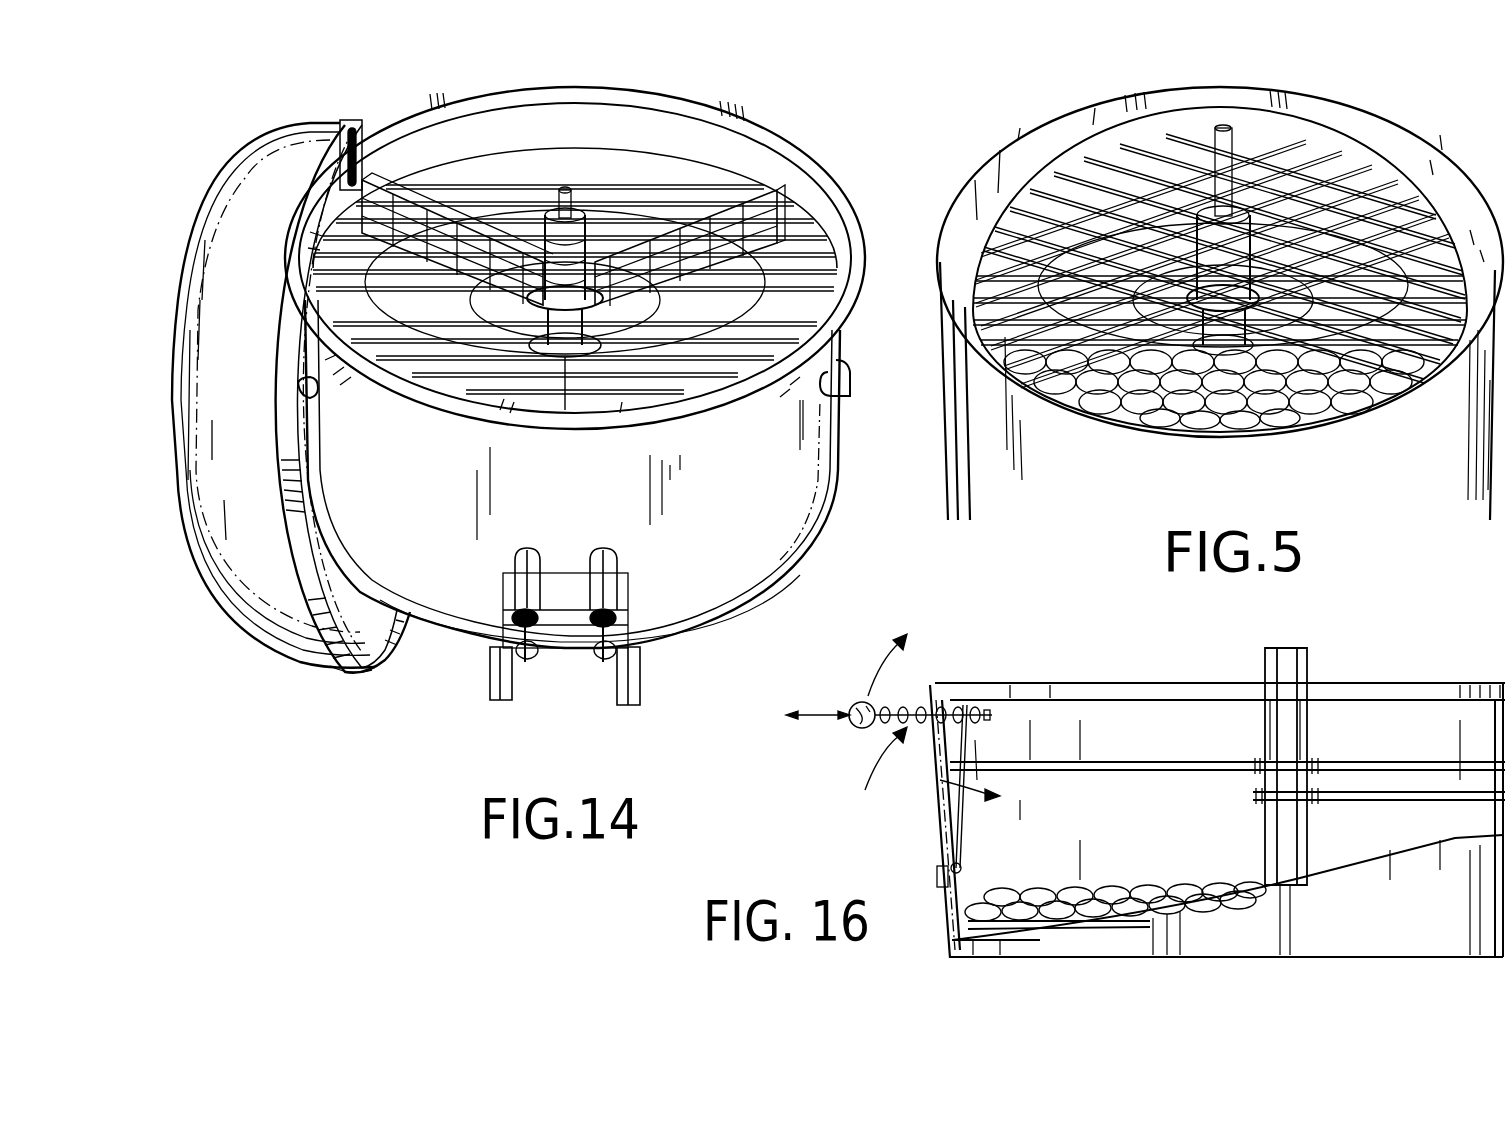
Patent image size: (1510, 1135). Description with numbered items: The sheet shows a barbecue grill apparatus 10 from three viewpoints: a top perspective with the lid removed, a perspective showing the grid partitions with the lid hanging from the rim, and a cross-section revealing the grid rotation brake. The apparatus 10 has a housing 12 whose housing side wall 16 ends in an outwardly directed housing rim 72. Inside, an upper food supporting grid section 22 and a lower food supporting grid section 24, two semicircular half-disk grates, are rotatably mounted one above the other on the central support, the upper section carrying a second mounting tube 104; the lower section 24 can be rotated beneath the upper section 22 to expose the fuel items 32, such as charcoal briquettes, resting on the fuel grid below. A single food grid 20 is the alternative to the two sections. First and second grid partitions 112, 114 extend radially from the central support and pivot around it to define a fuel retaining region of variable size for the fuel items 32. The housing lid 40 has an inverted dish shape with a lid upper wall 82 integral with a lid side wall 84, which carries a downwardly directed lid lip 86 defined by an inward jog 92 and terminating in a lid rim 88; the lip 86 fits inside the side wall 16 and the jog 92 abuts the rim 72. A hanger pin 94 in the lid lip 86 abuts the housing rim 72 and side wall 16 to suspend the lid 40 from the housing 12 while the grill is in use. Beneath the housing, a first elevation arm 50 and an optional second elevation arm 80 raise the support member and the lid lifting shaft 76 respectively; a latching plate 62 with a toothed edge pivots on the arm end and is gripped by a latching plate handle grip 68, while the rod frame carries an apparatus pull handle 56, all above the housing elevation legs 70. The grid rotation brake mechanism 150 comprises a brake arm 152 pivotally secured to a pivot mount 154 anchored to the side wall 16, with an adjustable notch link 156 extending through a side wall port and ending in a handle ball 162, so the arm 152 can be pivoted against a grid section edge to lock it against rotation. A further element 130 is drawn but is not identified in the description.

In FIG. 14, the barbecue grill apparatus 10 is at (745, 92).
In FIG. 5, the barbecue grill apparatus 10 is at (975, 128).
In FIG. 16, the barbecue grill apparatus 10 is at (1110, 648).
In FIG. 14, the housing 12 is at (822, 462).
In FIG. 5, the housing 12 is at (956, 400).
In FIG. 14, the housing side wall 16 is at (830, 485).
In FIG. 5, the housing side wall 16 is at (960, 448).
In FIG. 16, the housing side wall 16 is at (945, 905).
In FIG. 16, the single food grid 20 is at (1265, 830).
In FIG. 14, the upper food supporting grid section 22 is at (512, 162).
In FIG. 5, the upper food supporting grid section 22 is at (1330, 167).
In FIG. 16, the upper food supporting grid section 22 is at (1140, 772).
In FIG. 14, the lower food supporting grid section 24 is at (425, 345).
In FIG. 5, the lower food supporting grid section 24 is at (1010, 290).
In FIG. 16, the lower food supporting grid section 24 is at (1400, 793).
In FIG. 5, the fuel items 32 is at (1104, 408).
In FIG. 16, the fuel items 32 is at (1185, 893).
In FIG. 14, the housing lid 40 is at (200, 235).
In FIG. 14, the first elevation arm 50 is at (527, 662).
In FIG. 14, the apparatus pull handle 56 is at (553, 583).
In FIG. 14, the latching plate 62 is at (596, 660).
In FIG. 14, the latching plate handle grip 68 is at (518, 566).
In FIG. 14, the housing elevation legs 70 is at (490, 672).
In FIG. 14, the housing rim 72 is at (797, 160).
In FIG. 5, the housing rim 72 is at (1387, 120).
In FIG. 16, the housing rim 72 is at (1393, 688).
In FIG. 14, the lid lifting shaft 76 is at (569, 195).
In FIG. 5, the lid lifting shaft 76 is at (1213, 137).
In FIG. 14, the second elevation arm 80 is at (606, 662).
In FIG. 14, the lid upper wall 82 is at (180, 527).
In FIG. 14, the lid side wall 84 is at (318, 124).
In FIG. 14, the lid lip 86 is at (398, 630).
In FIG. 14, the lid rim 88 is at (312, 595).
In FIG. 14, the inward jog 92 is at (335, 670).
In FIG. 14, the hanger pin 94 is at (374, 160).
In FIG. 16, the second mounting tube 104 is at (1308, 732).
In FIG. 14, the first grid partition 112 is at (360, 218).
In FIG. 14, the second grid partition 114 is at (762, 196).
In FIG. 14, the handle hook 130 is at (852, 370).
In FIG. 16, the grid rotation brake mechanism 150 is at (865, 727).
In FIG. 16, the brake arm 152 is at (962, 827).
In FIG. 16, the pivot mount 154 is at (960, 882).
In FIG. 16, the adjustable notch link 156 is at (922, 708).
In FIG. 16, the handle ball 162 is at (855, 705).